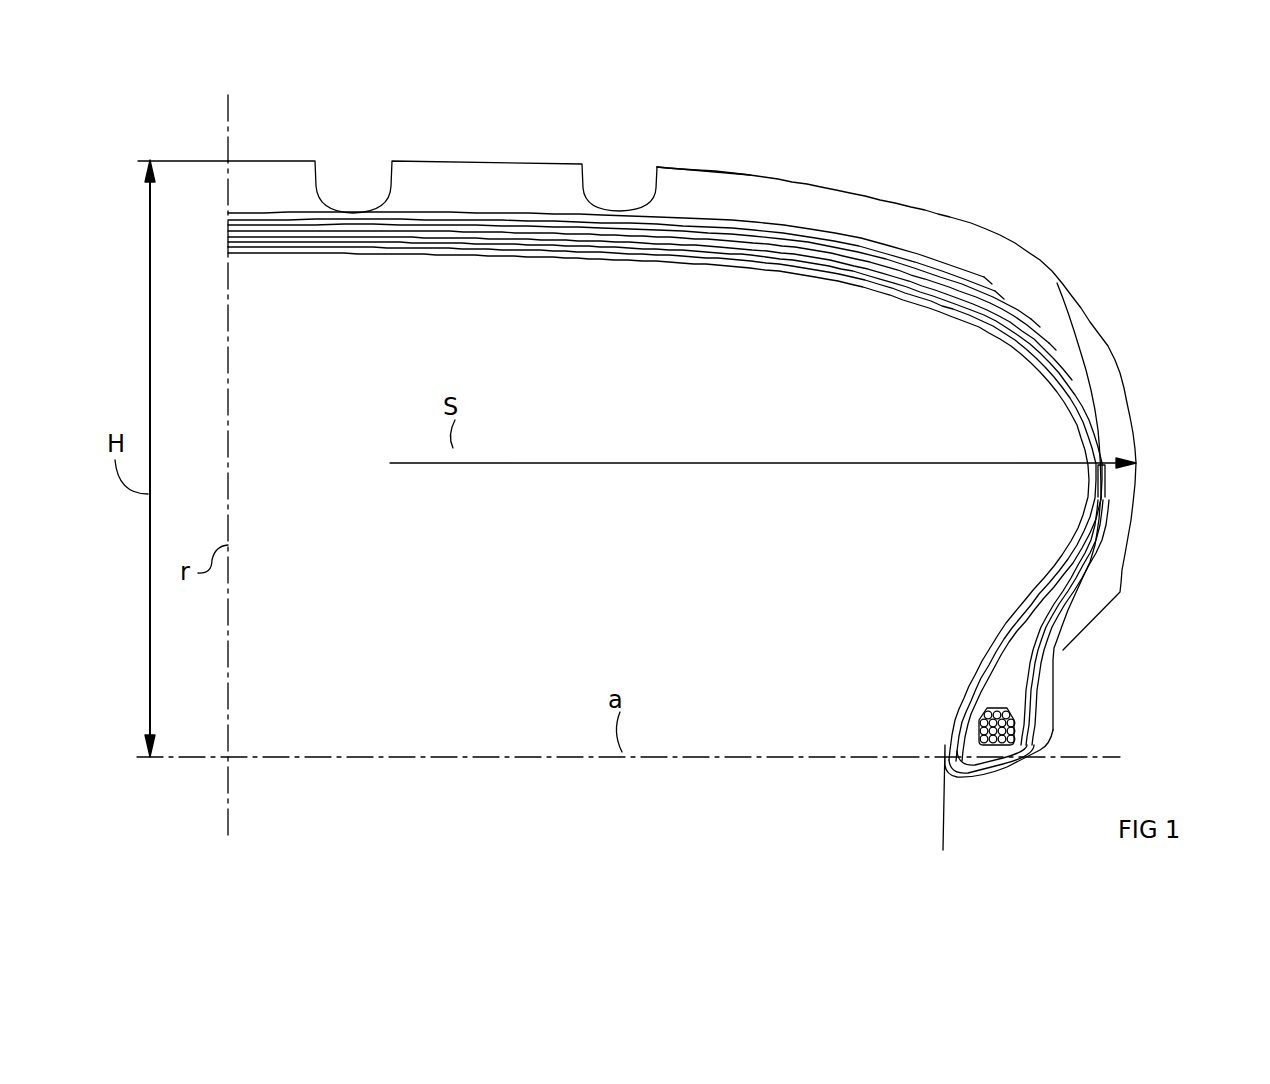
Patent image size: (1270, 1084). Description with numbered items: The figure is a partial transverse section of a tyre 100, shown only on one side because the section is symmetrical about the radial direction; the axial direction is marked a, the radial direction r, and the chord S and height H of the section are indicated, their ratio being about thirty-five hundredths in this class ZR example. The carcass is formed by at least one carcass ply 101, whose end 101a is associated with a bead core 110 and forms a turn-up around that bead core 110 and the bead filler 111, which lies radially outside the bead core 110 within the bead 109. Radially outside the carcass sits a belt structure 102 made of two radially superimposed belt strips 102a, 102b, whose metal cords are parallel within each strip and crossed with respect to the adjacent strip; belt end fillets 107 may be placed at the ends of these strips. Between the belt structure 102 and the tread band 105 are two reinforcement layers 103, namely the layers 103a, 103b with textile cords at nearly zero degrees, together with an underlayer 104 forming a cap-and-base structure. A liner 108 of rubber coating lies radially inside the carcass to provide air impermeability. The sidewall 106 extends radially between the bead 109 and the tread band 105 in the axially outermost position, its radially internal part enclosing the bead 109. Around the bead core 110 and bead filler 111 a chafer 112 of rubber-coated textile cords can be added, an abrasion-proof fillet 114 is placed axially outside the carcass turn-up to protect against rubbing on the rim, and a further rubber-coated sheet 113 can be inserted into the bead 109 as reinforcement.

The tyre 100 is at (1082, 233).
The carcass ply 101 is at (410, 249).
The end of the carcass ply 101a is at (1101, 488).
The belt structure 102 is at (570, 241).
The belt strip 102a is at (505, 244).
The belt strip 102b is at (620, 236).
The reinforcement layer 103 is at (497, 225).
The reinforcement layer at 0° 103a is at (440, 230).
The reinforcement layer at 0° 103b is at (557, 219).
The underlayer 104 is at (870, 238).
The tread band 105 is at (757, 197).
The sidewall 106 is at (1108, 425).
The belt end fillet 107 is at (1023, 328).
The liner 108 is at (270, 254).
The bead 109 is at (965, 630).
The bead core 110 is at (1018, 735).
The bead filler 111 is at (995, 695).
The chafer 112 is at (1030, 620).
The rubber-coated sheet 113 is at (970, 778).
The abrasion-proof fillet 114 is at (1090, 545).